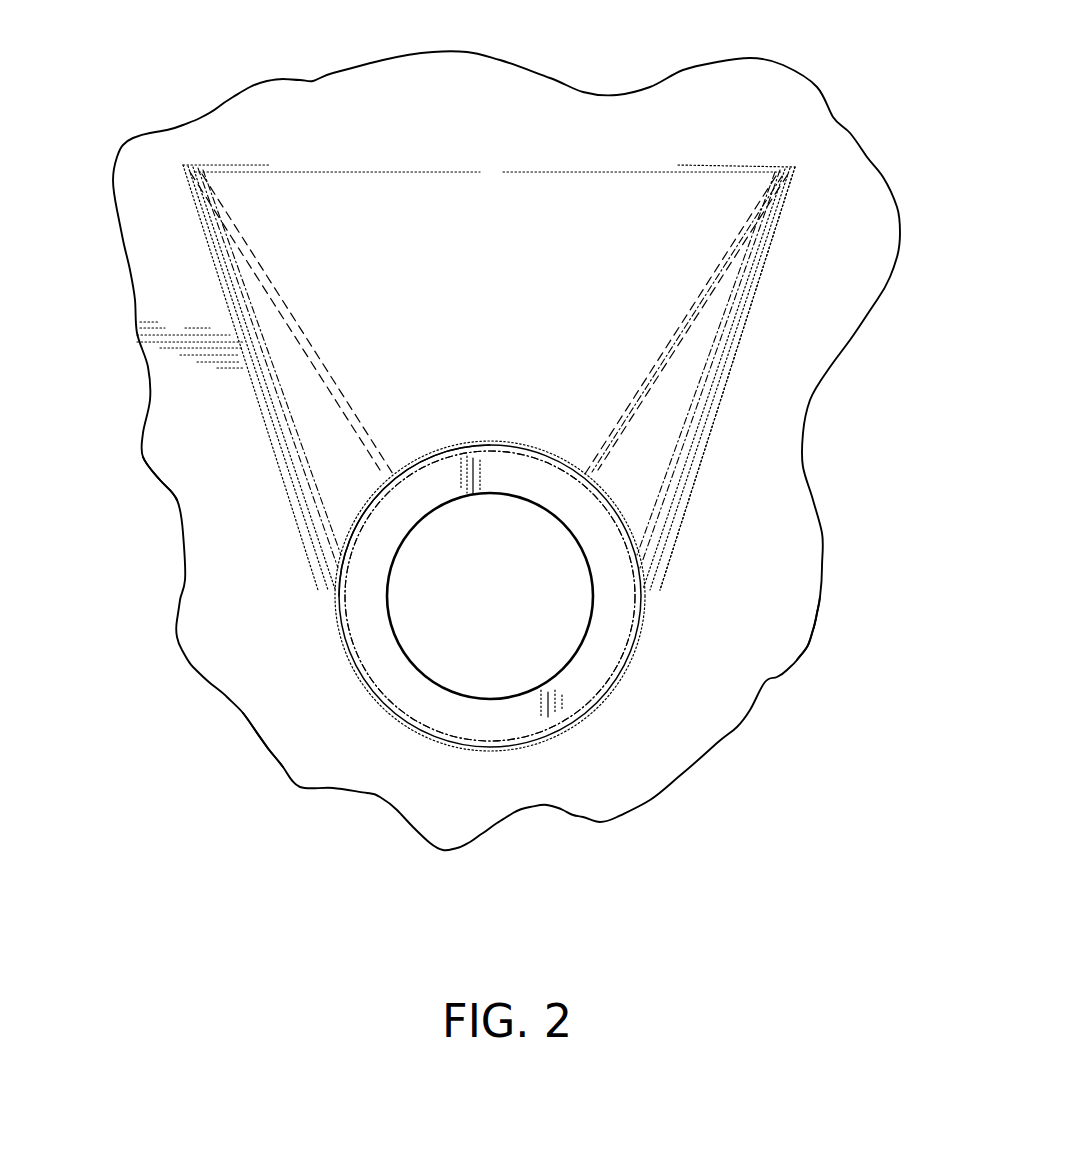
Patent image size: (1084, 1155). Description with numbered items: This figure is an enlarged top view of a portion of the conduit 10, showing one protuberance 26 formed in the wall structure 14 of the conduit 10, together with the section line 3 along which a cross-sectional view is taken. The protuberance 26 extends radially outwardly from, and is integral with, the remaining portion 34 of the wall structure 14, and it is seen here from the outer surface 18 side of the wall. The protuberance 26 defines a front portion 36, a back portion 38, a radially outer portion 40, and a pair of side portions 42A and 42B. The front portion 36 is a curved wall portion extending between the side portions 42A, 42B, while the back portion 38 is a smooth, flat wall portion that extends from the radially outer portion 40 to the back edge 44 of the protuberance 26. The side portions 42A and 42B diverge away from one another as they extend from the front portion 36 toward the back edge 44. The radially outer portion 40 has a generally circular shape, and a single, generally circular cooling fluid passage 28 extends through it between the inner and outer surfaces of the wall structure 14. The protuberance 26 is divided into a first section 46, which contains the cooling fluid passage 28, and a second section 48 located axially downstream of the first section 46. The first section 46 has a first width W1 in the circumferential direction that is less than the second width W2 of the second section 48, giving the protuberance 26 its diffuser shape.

The section line 3- 3 is at (488, 135).
The conduit 10 is at (722, 750).
The wall structure 14 is at (788, 620).
The outer surface 18 is at (277, 737).
The protuberance 26 is at (742, 364).
The cooling fluid passage 28 is at (562, 671).
The remaining portion 34 is at (207, 493).
The front portion 36 is at (505, 749).
The back portion 38 is at (489, 342).
The radially outer portion 40 is at (583, 672).
The side portion 42A is at (297, 387).
The side portion 42B is at (662, 487).
The back edge 44 is at (421, 166).
The first section 46 is at (379, 655).
The second section 48 is at (700, 322).
The first width W1 is at (250, 597).
The second width W2 is at (130, 213).